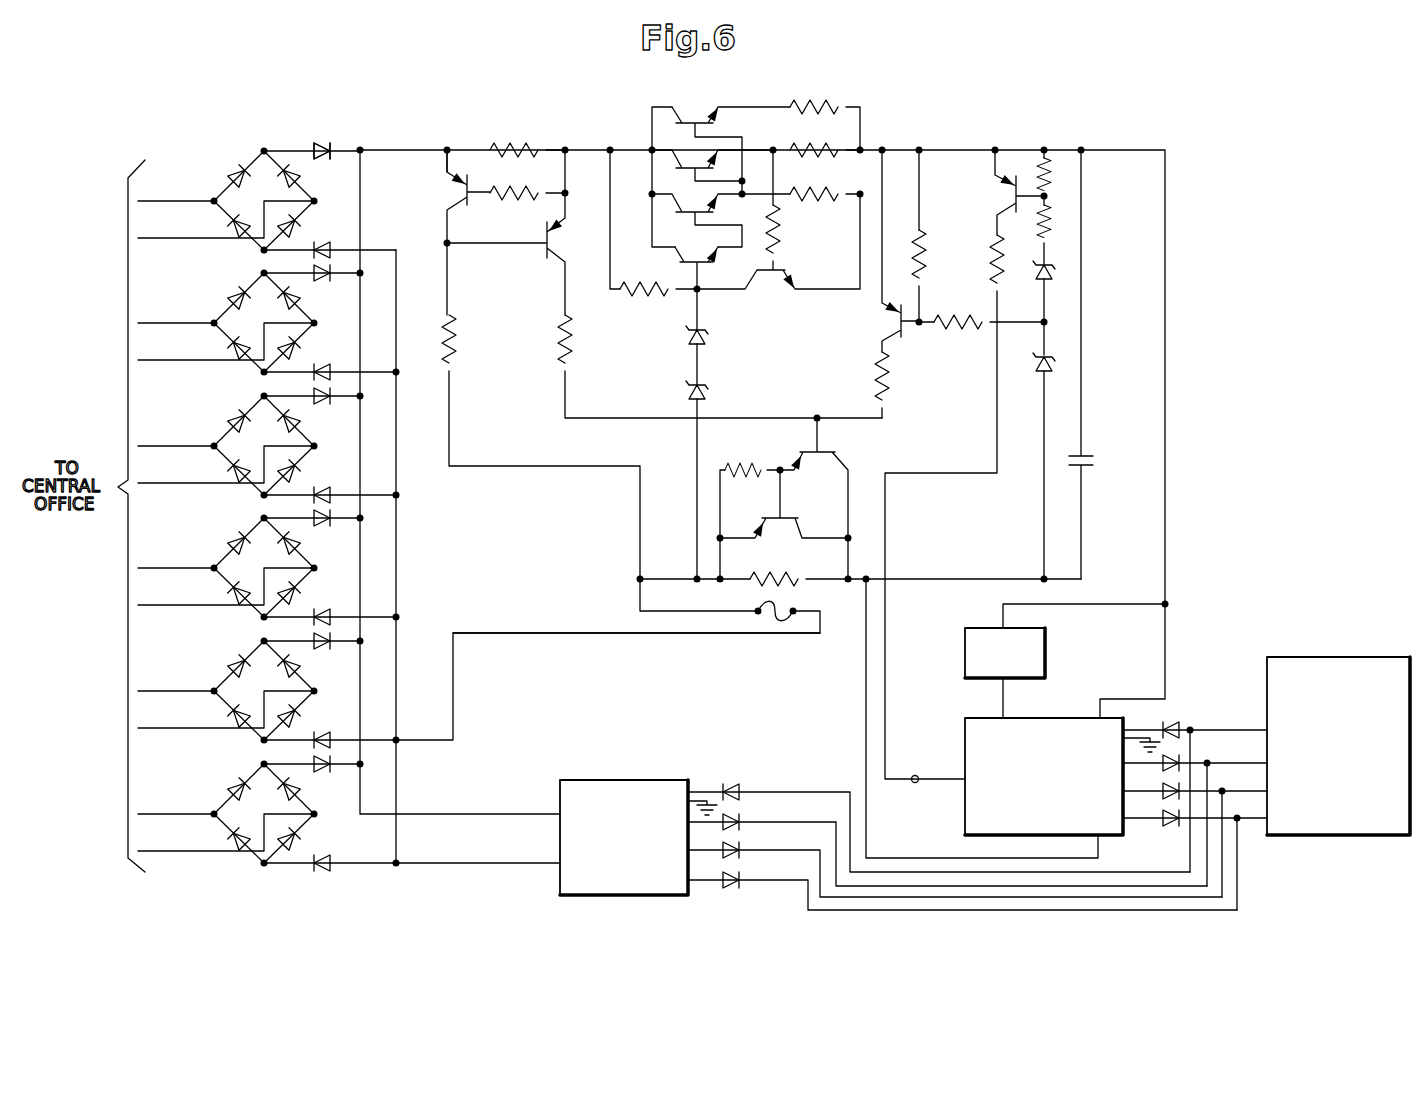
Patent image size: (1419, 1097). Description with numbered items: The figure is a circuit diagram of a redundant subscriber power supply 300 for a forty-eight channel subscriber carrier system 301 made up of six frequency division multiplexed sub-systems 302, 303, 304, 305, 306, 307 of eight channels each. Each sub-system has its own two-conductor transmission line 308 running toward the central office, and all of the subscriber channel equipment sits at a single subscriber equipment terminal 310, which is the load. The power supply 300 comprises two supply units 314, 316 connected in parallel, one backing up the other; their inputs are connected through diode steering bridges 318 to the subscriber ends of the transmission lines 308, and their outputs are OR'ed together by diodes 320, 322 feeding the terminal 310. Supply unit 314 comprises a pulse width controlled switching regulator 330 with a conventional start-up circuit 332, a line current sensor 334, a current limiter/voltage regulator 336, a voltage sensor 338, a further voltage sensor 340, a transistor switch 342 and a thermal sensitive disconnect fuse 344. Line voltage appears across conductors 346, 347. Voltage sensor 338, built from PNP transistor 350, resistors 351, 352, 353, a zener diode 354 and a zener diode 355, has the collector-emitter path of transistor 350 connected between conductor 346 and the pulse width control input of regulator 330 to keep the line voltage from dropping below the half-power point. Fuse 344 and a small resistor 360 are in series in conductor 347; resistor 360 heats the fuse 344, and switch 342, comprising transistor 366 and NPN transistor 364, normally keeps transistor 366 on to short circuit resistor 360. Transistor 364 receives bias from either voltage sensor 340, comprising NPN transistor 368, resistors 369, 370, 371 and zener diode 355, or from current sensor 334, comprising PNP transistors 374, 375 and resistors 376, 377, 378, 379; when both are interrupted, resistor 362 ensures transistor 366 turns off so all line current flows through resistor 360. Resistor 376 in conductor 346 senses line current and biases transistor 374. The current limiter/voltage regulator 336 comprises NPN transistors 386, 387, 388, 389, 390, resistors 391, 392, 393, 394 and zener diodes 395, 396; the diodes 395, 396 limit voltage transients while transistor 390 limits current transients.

The subscriber power supply 300 is at (456, 140).
The 48 channel subscriber carrier system 301 is at (294, 138).
The carrier sub-system 302 is at (183, 188).
The carrier sub-system 303 is at (172, 327).
The carrier sub-system 304 is at (176, 441).
The carrier sub-system 305 is at (176, 563).
The carrier sub-system 306 is at (176, 682).
The carrier sub-system 307 is at (188, 799).
The two-conductor transmission line 308 is at (162, 238).
The subscriber equipment terminal 310 is at (1343, 657).
The power supply unit 314 is at (614, 650).
The power supply unit 316 is at (605, 778).
The diode steering bridge 318 is at (312, 207).
The diode 320 is at (1168, 723).
The diode 322 is at (740, 878).
The pulse width controlled switching regulator 330 is at (965, 742).
The start-up circuit 332 is at (1045, 653).
The line current sensor 334 is at (470, 232).
The current limiter/voltage regulator 336 is at (788, 194).
The voltage sensor 338 is at (1013, 464).
The voltage sensor 340 is at (926, 284).
The transistor switch 342 is at (859, 501).
The thermal sensitive disconnect fuse 344 is at (782, 617).
The conductor 346 is at (975, 149).
The conductor 347 is at (866, 694).
The PNP transistor 350 is at (1025, 172).
The resistor 351 is at (1046, 162).
The resistor 352 is at (1047, 238).
The resistor 353 is at (995, 243).
The zener diode 354 is at (1052, 279).
The zener diode 355 is at (1040, 369).
The resistor 360 is at (789, 577).
The resistor 362 is at (736, 467).
The NPN transistor 364 is at (826, 454).
The transistor 366 is at (797, 528).
The NPN transistor 368 is at (907, 338).
The resistor 369 is at (923, 258).
The resistor 370 is at (955, 331).
The resistor 371 is at (890, 387).
The PNP transistor 374 is at (470, 205).
The PNP transistor 375 is at (548, 256).
The resistor 376 is at (533, 148).
The resistor 377 is at (519, 198).
The resistor 378 is at (455, 345).
The resistor 379 is at (568, 360).
The NPN transistor 386 is at (707, 268).
The NPN transistor 387 is at (721, 220).
The NPN transistor 388 is at (678, 160).
The NPN transistor 389 is at (727, 123).
The NPN transistor 390 is at (797, 269).
The resistor 391 is at (830, 110).
The resistor 392 is at (829, 153).
The resistor 393 is at (829, 200).
The resistor 394 is at (658, 297).
The zener diode 395 is at (710, 339).
The zener diode 396 is at (710, 394).